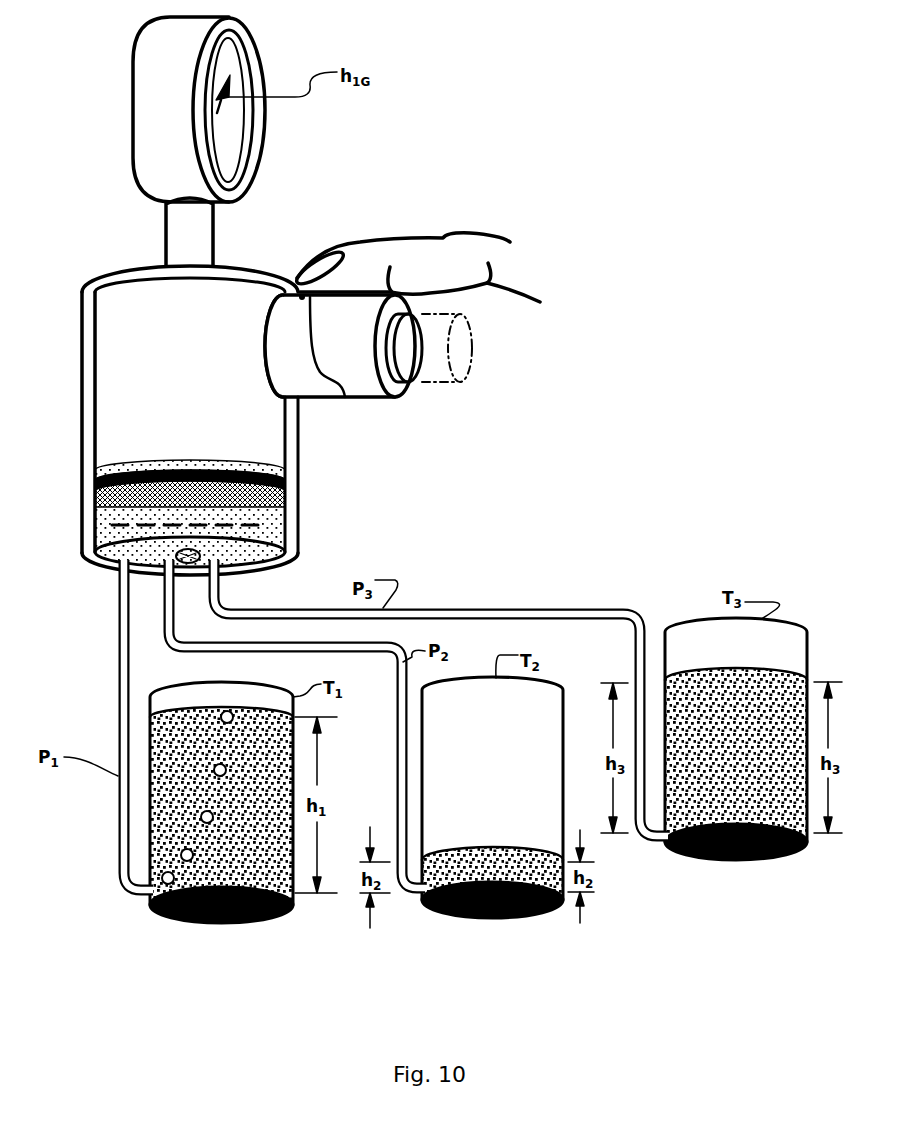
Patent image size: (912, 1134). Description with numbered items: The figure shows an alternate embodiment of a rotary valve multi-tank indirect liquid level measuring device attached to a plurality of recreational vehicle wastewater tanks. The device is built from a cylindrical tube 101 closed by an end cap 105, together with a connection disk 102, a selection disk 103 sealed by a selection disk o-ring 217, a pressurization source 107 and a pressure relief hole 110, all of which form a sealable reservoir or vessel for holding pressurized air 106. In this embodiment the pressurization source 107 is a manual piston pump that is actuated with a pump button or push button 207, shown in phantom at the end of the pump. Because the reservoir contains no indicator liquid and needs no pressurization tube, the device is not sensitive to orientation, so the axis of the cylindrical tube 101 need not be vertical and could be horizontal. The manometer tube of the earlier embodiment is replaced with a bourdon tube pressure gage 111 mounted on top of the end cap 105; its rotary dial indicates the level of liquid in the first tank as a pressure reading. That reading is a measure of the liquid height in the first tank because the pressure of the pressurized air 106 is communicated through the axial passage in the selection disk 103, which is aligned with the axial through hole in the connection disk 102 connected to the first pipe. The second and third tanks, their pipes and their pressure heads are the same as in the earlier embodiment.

The bourdon tube pressure gage 111 is at (160, 152).
The end cap 105 is at (106, 280).
The pressurized air 106 is at (100, 341).
The selection disk o-ring 217 is at (95, 483).
The selection disk 103 is at (95, 494).
The connection disk 102 is at (106, 572).
The cylindrical tube 101 is at (298, 538).
The pressurization source 107 is at (377, 400).
The pressure relief hole 110 is at (342, 400).
The pump button 207 is at (472, 348).